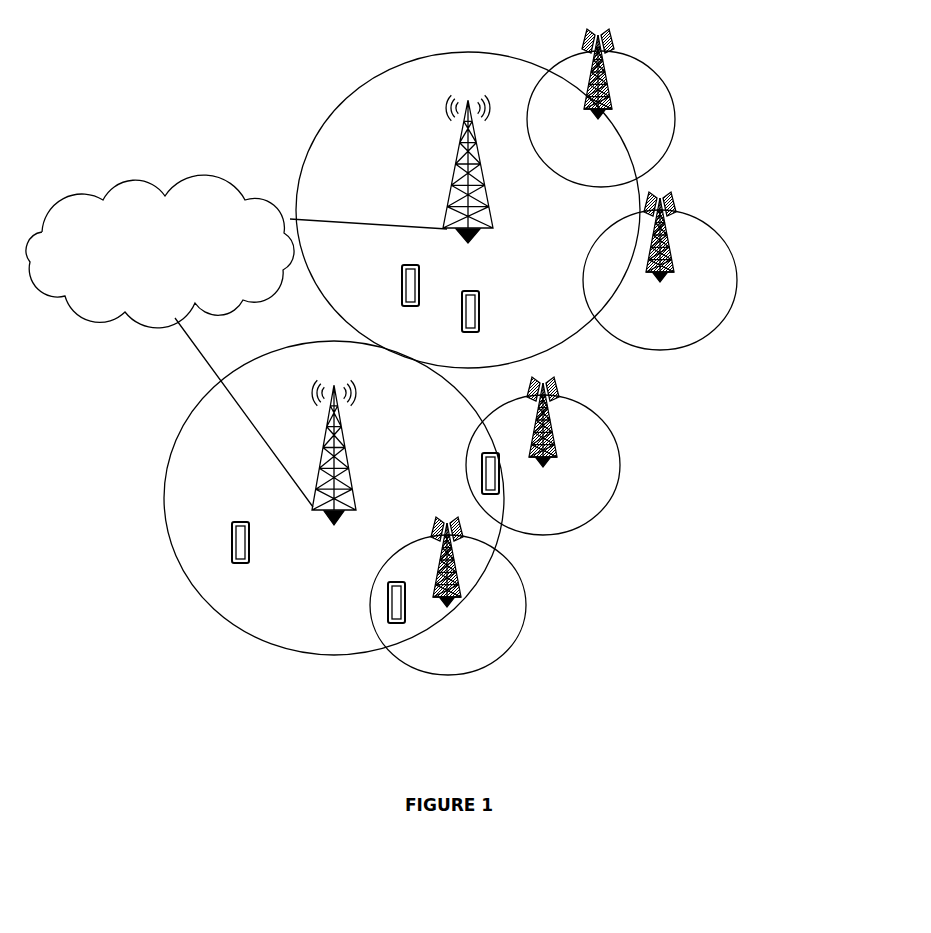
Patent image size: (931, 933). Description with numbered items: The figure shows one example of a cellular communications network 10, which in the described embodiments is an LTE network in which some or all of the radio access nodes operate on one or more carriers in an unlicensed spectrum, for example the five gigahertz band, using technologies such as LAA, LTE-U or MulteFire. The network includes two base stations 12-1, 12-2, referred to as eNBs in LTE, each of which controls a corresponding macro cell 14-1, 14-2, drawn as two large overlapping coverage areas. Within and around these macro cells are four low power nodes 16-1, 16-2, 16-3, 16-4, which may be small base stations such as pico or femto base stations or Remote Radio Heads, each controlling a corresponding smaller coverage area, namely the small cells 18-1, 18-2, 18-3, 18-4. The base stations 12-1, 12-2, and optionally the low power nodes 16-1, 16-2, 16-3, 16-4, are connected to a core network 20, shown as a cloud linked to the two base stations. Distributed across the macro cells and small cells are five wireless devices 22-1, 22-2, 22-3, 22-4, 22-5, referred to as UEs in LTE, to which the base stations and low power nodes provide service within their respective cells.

The cellular communications network 10 is at (730, 110).
The base station 12-1 is at (350, 460).
The base station 12-2 is at (482, 180).
The macro cell 14-1 is at (242, 628).
The macro cell 14-2 is at (470, 53).
The low power node 16-1 is at (460, 582).
The low power node 16-2 is at (556, 445).
The low power node 16-3 is at (668, 258).
The low power node 16-4 is at (605, 98).
The small cell 18-1 is at (523, 606).
The small cell 18-2 is at (612, 434).
The small cell 18-3 is at (730, 248).
The small cell 18-4 is at (662, 76).
The core network 20 is at (142, 287).
The wireless device 22-1 is at (404, 582).
The wireless device 22-2 is at (496, 452).
The wireless device 22-3 is at (249, 535).
The wireless device 22-4 is at (421, 283).
The wireless device 22-5 is at (480, 303).